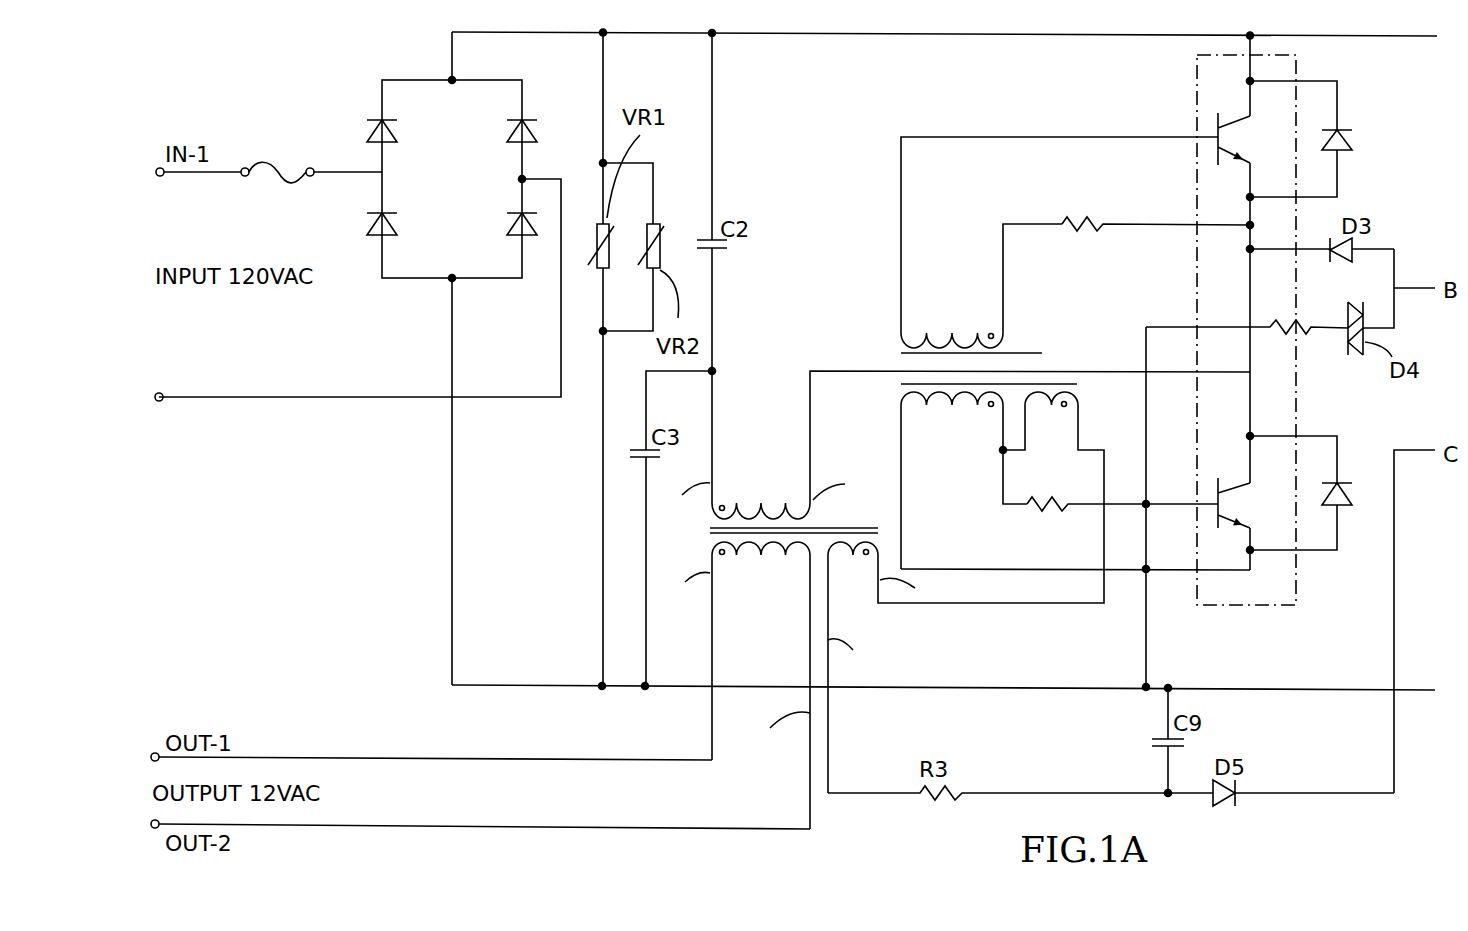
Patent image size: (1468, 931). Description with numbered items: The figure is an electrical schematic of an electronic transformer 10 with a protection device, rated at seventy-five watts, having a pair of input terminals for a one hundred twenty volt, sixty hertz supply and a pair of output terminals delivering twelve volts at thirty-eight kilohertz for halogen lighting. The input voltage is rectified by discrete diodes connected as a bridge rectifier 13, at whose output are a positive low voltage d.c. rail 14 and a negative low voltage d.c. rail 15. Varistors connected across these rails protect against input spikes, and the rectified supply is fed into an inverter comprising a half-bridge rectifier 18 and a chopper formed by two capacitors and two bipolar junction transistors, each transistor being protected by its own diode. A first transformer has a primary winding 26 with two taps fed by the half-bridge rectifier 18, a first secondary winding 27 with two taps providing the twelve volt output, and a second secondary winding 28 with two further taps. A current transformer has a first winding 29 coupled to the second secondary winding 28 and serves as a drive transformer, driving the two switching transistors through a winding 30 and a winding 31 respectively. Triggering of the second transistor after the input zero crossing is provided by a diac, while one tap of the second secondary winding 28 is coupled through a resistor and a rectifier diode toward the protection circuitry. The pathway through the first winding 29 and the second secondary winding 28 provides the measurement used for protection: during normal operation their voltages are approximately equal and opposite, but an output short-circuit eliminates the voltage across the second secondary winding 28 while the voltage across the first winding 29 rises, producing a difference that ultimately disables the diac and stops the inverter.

The electronic transformer 10 is at (378, 530).
The bridge rectifier 13 is at (415, 282).
The positive low voltage d.c. rail 14 is at (840, 34).
The negative low voltage d.c. rail 15 is at (990, 690).
The half-bridge rectifier 18 is at (1195, 88).
The primary winding 26 is at (780, 498).
The first secondary winding 27 is at (747, 564).
The second secondary winding 28 is at (843, 564).
The first winding 29 is at (1051, 413).
The winding 30 is at (915, 330).
The winding 31 is at (961, 412).